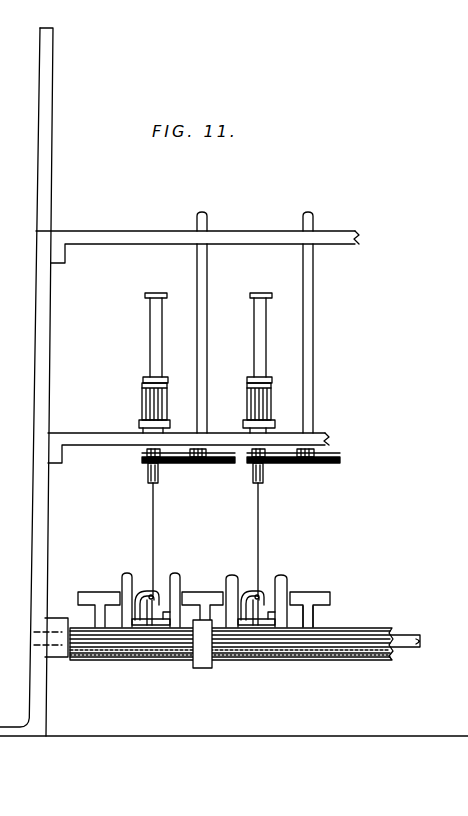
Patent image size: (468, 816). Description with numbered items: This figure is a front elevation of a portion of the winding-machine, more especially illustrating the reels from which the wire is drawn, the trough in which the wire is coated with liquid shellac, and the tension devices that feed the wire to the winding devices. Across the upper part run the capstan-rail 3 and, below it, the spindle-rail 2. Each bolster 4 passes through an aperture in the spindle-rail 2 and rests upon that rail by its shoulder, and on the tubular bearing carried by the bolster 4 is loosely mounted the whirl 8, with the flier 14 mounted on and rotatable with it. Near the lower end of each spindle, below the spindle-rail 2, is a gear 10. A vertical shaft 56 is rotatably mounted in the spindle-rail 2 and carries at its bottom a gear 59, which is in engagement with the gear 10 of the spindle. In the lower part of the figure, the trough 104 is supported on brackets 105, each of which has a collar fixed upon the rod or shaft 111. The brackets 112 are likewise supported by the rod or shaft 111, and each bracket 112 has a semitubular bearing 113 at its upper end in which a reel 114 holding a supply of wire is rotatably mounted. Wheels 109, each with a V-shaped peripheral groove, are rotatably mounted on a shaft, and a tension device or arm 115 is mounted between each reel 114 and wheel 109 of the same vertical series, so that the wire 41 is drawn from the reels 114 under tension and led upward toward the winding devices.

The spindle-rail 2 is at (200, 448).
The capstan-rail 3 is at (203, 247).
The bolster 4 is at (141, 432).
The whirl 8 is at (207, 402).
The gear 10 is at (140, 461).
The flier 14 is at (201, 335).
The wire 41 is at (157, 537).
The vertical shaft 56 is at (255, 322).
The gear 59 is at (230, 465).
The trough 104 is at (231, 656).
The brackets 105 is at (207, 655).
The wheels 109 is at (269, 606).
The rod or shaft 111 is at (263, 644).
The brackets 112 is at (318, 617).
The semitubular bearing 113 is at (218, 603).
The reels 114 is at (121, 574).
The tension device or arm 115 is at (159, 588).